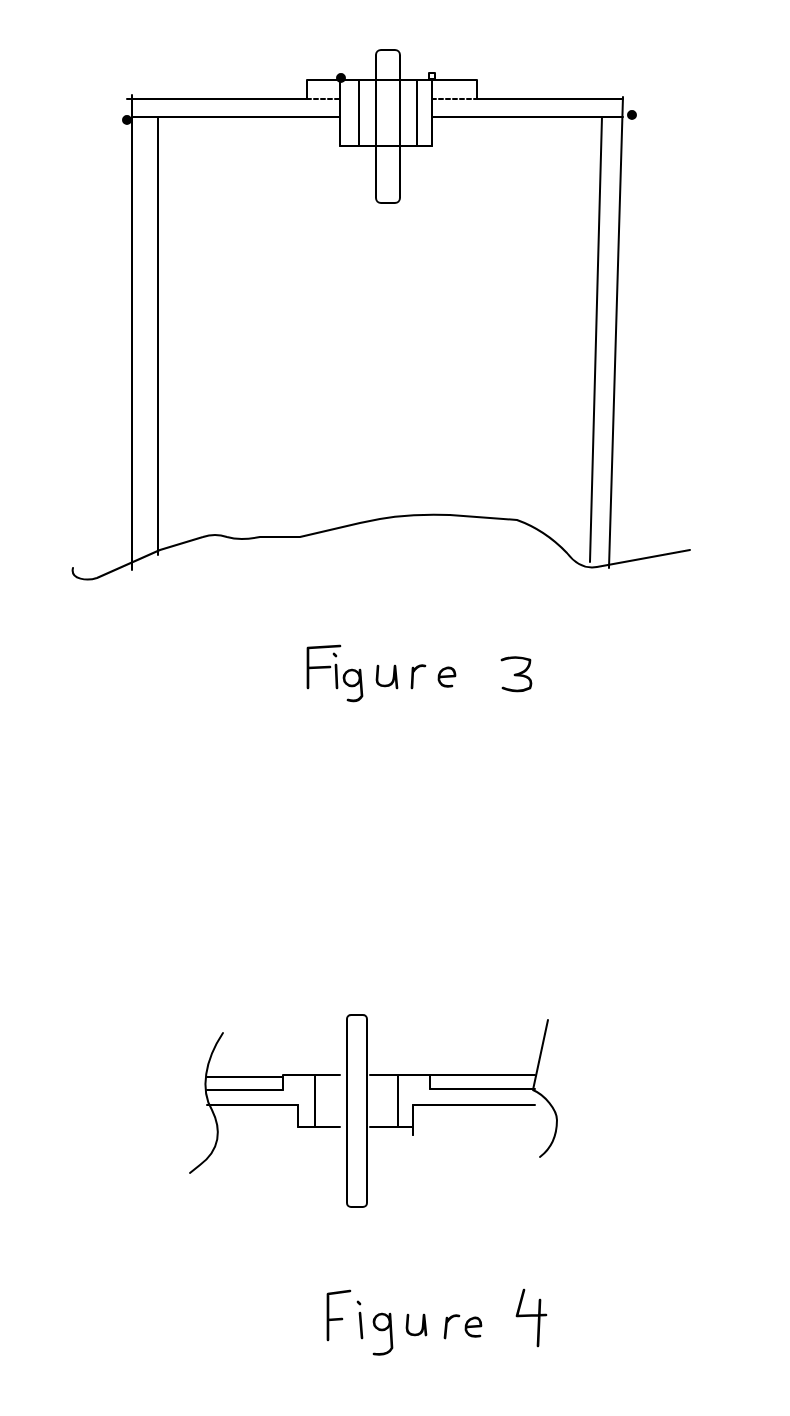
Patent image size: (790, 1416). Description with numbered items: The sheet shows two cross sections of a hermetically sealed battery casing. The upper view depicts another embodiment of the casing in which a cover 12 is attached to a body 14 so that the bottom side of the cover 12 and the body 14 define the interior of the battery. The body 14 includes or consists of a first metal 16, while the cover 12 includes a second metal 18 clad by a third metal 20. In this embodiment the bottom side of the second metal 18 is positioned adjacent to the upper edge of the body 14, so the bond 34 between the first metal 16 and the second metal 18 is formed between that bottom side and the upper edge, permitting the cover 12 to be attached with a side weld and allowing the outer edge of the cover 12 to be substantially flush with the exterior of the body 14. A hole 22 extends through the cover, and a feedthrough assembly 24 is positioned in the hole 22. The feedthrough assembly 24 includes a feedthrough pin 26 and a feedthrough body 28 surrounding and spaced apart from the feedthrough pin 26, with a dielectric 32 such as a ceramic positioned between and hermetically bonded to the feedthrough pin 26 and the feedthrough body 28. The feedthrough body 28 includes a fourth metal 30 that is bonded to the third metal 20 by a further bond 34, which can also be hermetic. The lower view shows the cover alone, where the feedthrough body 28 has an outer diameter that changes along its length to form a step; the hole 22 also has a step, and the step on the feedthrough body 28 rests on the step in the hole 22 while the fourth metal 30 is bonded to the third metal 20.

In FIG. 3, the cover 12 is at (209, 74).
In FIG. 4, the cover 12 is at (501, 1044).
In FIG. 3, the body 14 is at (131, 198).
In FIG. 3, the first metal 16 is at (140, 392).
In FIG. 3, the second metal 18 is at (238, 107).
In FIG. 4, the second metal 18 is at (243, 1097).
In FIG. 3, the third metal 20 is at (318, 90).
In FIG. 4, the third metal 20 is at (240, 1087).
In FIG. 3, the hole 22 is at (342, 107).
In FIG. 3, the feedthrough assembly 24 is at (451, 147).
In FIG. 4, the feedthrough assembly 24 is at (425, 1134).
In FIG. 3, the feedthrough pin 26 is at (388, 46).
In FIG. 4, the feedthrough pin 26 is at (362, 1008).
In FIG. 3, the feedthrough body 28 is at (423, 150).
In FIG. 4, the feedthrough body 28 is at (303, 1068).
In FIG. 3, the fourth metal 30 is at (432, 80).
In FIG. 4, the fourth metal 30 is at (307, 1118).
In FIG. 3, the dielectric 32 is at (368, 90).
In FIG. 4, the dielectric 32 is at (378, 1087).
In FIG. 3, the bond 34 is at (127, 122).